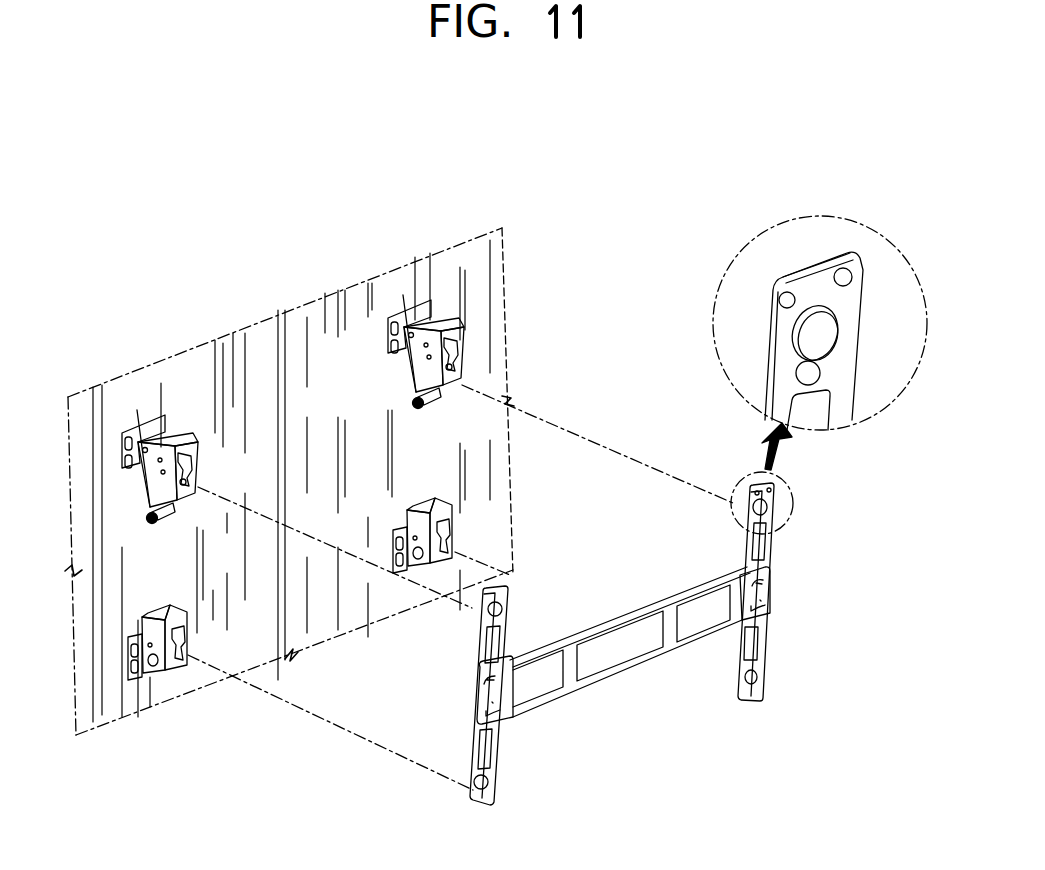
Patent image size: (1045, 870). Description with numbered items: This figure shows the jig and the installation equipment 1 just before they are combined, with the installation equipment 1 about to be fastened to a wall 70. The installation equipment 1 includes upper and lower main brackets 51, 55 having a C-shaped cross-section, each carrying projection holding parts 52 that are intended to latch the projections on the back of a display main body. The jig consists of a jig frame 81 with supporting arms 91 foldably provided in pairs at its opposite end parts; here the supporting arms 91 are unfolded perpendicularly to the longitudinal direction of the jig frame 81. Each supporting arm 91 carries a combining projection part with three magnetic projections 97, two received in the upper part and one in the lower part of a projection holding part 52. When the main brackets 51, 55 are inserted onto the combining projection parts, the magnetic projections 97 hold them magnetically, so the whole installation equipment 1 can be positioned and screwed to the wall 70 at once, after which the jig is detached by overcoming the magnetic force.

The installation equipment 1 is at (135, 416).
The upper main bracket 51 is at (152, 512).
The projection holding part 52 is at (199, 456).
The lower main bracket 55 is at (437, 568).
The wall 70 is at (265, 343).
The jig frame 81 is at (614, 668).
The supporting arm 91 is at (746, 547).
The magnetic projection 97 is at (818, 310).